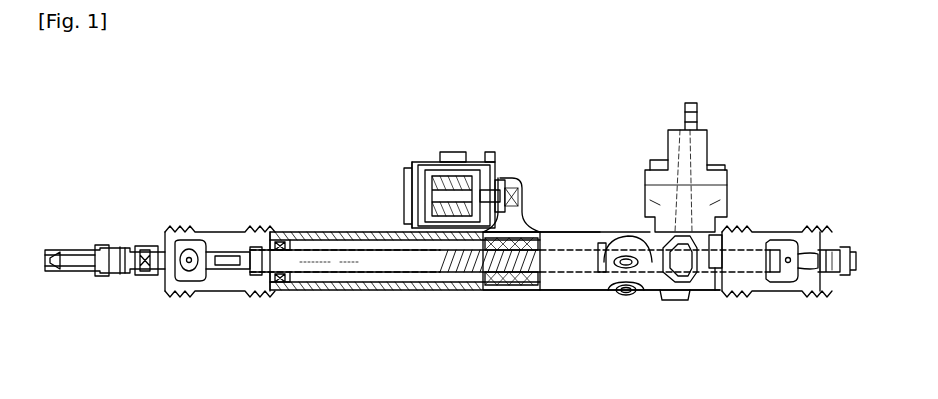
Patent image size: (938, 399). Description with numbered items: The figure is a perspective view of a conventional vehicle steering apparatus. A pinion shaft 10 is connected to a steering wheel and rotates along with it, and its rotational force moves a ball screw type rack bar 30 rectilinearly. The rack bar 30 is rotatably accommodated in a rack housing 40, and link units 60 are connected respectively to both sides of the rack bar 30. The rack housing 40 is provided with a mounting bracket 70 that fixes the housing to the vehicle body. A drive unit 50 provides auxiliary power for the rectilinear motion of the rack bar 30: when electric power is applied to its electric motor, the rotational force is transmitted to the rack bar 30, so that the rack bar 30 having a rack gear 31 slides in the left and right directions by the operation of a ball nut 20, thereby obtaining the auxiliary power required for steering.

The pinion shaft 10 is at (686, 108).
The ball nut 20 is at (503, 292).
The ball screw type rack bar 30 is at (324, 292).
The rack gear 31 is at (452, 292).
The rack housing 40 is at (364, 293).
The drive unit 50 is at (514, 183).
The link unit 60 is at (124, 284).
The mounting bracket 70 is at (622, 302).